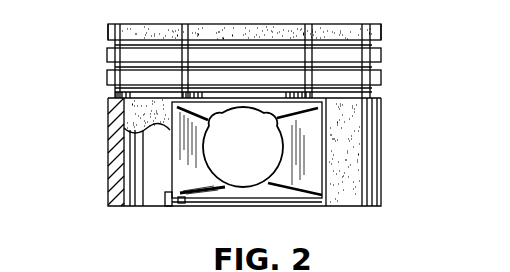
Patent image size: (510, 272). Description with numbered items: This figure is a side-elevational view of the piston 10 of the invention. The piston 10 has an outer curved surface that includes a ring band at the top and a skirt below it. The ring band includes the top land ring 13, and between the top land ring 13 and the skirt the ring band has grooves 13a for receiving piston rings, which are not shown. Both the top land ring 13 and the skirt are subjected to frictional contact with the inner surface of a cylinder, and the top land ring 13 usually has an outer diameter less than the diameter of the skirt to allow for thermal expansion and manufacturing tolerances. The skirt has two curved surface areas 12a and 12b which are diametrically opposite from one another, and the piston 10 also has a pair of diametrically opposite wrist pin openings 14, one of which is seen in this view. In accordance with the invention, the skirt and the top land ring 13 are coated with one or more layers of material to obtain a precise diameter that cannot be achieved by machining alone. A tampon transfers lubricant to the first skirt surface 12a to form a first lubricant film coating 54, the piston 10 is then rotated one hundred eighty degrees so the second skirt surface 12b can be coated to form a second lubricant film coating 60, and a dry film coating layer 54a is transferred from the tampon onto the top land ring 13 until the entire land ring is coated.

The piston 10 is at (391, 58).
The top land ring 13 is at (108, 34).
The grooves 13a is at (108, 87).
The coating layer 54a is at (233, 32).
The first lubricant film coating 54 is at (134, 108).
The curved surface area of piston skirt 12a is at (105, 169).
The curved surface area of piston skirt 12b is at (382, 138).
The second lubricant film coating 60 is at (358, 169).
The wrist pin openings 14 is at (262, 174).